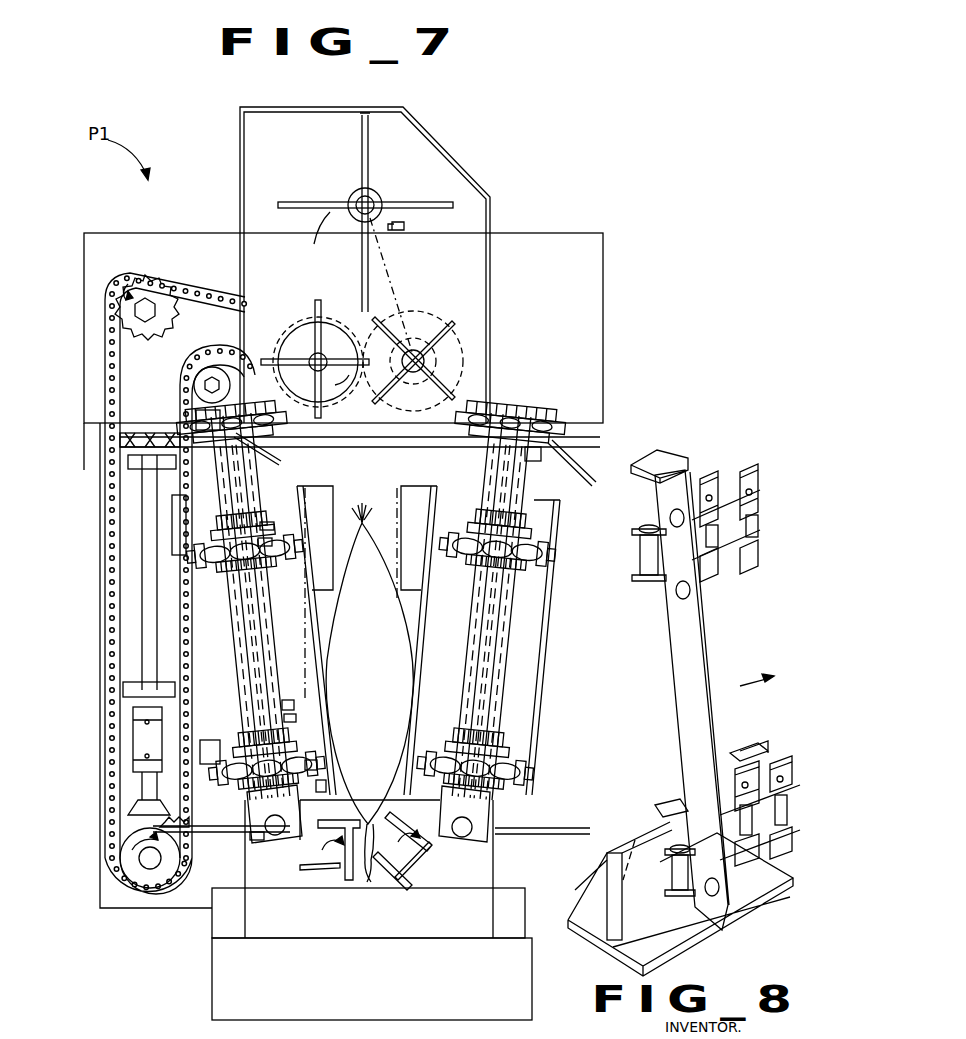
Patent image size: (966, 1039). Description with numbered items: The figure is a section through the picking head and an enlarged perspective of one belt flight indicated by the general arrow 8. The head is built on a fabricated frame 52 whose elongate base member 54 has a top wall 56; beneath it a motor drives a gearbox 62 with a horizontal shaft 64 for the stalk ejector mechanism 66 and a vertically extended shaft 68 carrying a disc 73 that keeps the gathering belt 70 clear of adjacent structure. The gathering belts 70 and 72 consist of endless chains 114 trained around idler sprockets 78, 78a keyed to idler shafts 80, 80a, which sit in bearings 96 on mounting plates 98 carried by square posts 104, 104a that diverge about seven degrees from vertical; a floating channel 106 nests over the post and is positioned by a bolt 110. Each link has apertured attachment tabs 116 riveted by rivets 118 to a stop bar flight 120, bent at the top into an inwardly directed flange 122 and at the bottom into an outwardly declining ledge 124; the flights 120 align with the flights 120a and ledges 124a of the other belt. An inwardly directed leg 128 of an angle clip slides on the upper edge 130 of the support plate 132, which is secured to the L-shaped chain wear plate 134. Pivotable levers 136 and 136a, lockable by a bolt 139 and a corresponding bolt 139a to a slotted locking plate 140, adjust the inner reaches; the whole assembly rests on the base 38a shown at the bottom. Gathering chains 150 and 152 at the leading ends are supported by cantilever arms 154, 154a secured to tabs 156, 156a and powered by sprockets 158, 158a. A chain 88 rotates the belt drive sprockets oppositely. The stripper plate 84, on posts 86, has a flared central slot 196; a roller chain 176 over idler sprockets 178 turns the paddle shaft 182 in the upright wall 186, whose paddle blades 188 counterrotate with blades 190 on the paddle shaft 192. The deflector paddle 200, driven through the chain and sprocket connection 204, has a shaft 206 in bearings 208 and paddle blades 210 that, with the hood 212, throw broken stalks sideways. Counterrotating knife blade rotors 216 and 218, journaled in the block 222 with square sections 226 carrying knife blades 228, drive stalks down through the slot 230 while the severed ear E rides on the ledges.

In FIG. 7, the sheet metal hood 212 is at (432, 122).
In FIG. 7, the upright wall 186 is at (274, 256).
In FIG. 7, the driven deflector paddle 200 is at (455, 199).
In FIG. 7, the shaft 206 is at (357, 199).
In FIG. 7, the paddle blades 210 is at (386, 195).
In FIG. 7, the bearings 208 is at (400, 216).
In FIG. 7, the chain and sprocket drive connection 204 is at (415, 250).
In FIG. 7, the paddle blades 188 is at (324, 324).
In FIG. 7, the paddle shaft 182 is at (298, 357).
In FIG. 7, the paddle blades 190 is at (415, 326).
In FIG. 7, the paddle shaft 192 is at (425, 357).
In FIG. 7, the stalk ejector mechanism 66 is at (452, 333).
In FIG. 7, the idler sprockets 178 is at (169, 321).
In FIG. 7, the sprocket 158 is at (205, 402).
In FIG. 7, the tabs 156 is at (203, 415).
In FIG. 7, the roller chain 176 is at (108, 368).
In FIG. 7, the horizontal shaft 64 is at (138, 860).
In FIG. 7, the gearbox 62 is at (112, 910).
In FIG. 7, the slotted locking plate 140 is at (230, 840).
In FIG. 7, the pivotable lever 136 is at (160, 817).
In FIG. 7, the vertically extended shaft 68 is at (130, 779).
In FIG. 7, the disc 73 is at (120, 690).
In FIG. 7, the endless chains 114 is at (214, 573).
In FIG. 8, the endless chains 114 is at (646, 576).
In FIG. 7, the chain 88 is at (118, 441).
In FIG. 7, the cantilever arm 154 is at (165, 463).
In FIG. 7, the gathering chain 150 is at (162, 430).
In FIG. 7, the inwardly directed flange 122 is at (176, 508).
In FIG. 8, the inwardly directed flange 122 is at (663, 460).
In FIG. 7, the stripper plate 84 is at (410, 433).
In FIG. 7, the posts 86 is at (298, 440).
In FIG. 7, the central slot 196 is at (388, 432).
In FIG. 7, the square post 104 is at (286, 470).
In FIG. 7, the square post 104a is at (432, 470).
In FIG. 7, the idler shaft 80 is at (272, 640).
In FIG. 7, the idler sprockets 78 is at (225, 553).
In FIG. 7, the bearings 96 is at (260, 518).
In FIG. 7, the mounting plate 98 is at (255, 537).
In FIG. 7, the inwardly directed leg 128 is at (300, 730).
In FIG. 8, the inwardly directed leg 128 is at (673, 770).
In FIG. 7, the outwardly declining ledge 124a is at (310, 767).
In FIG. 7, the outwardly declining ledge 124 is at (325, 777).
In FIG. 8, the outwardly declining ledge 124 is at (710, 920).
In FIG. 7, the idler shaft 80a is at (487, 631).
In FIG. 7, the idler sprockets 78a is at (524, 542).
In FIG. 7, the sprocket 158a is at (530, 420).
In FIG. 7, the gathering chain 152 is at (565, 426).
In FIG. 7, the cantilever arm 154a is at (570, 437).
In FIG. 7, the tabs 156a is at (533, 460).
In FIG. 7, the gathering belt 70 is at (305, 507).
In FIG. 7, the gathering belt 72 is at (436, 514).
In FIG. 7, the severed ear E is at (380, 582).
In FIG. 7, the floating channel 106 is at (310, 591).
In FIG. 7, the stop bar flight 120 is at (312, 618).
In FIG. 8, the stop bar flight 120 is at (697, 650).
In FIG. 7, the stop bar flight 120a is at (420, 629).
In FIG. 7, the general arrow 8 is at (328, 685).
In FIG. 7, the bolt 139 is at (242, 806).
In FIG. 7, the plate 139a is at (500, 835).
In FIG. 7, the pivotable lever 136a is at (520, 800).
In FIG. 7, the top wall 56 is at (312, 818).
In FIG. 7, the knife blade 228 is at (316, 865).
In FIG. 7, the knife blade rotor 216 is at (332, 872).
In FIG. 7, the square sections 226 is at (345, 862).
In FIG. 7, the slot 230 is at (362, 850).
In FIG. 7, the knife blade rotor 218 is at (395, 860).
In FIG. 7, the journal block 222 is at (490, 875).
In FIG. 7, the elongate base member 54 is at (495, 857).
In FIG. 7, the bolt 110 is at (222, 875).
In FIG. 7, the fabricated frame 52 is at (245, 900).
In FIG. 7, the base 38a is at (372, 979).
In FIG. 8, the rivets 118 is at (668, 515).
In FIG. 8, the apertured attachment tabs 116 is at (748, 518).
In FIG. 8, the upper edge 130 is at (658, 800).
In FIG. 8, the gathering belt support plate 132 is at (635, 833).
In FIG. 8, the chain wear plate 134 is at (608, 925).